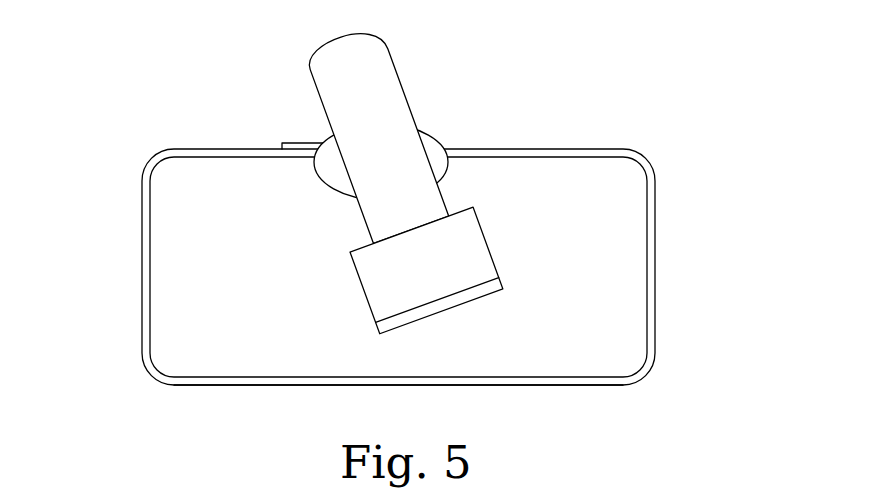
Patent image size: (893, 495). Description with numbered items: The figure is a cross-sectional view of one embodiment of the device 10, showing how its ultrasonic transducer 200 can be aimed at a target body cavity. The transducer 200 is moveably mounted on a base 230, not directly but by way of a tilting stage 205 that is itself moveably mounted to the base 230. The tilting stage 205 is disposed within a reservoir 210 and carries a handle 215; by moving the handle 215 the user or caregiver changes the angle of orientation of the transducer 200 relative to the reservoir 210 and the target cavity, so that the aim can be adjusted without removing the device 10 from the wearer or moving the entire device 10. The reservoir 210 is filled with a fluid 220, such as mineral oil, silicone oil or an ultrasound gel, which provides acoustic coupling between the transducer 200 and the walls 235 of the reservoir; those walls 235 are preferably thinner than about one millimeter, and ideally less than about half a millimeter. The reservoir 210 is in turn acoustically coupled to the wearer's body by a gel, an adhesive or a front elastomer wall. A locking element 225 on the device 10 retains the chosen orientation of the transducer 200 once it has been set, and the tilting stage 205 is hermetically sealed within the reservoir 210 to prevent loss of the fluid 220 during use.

The device 10 is at (401, 228).
The ultrasonic transducer 200 is at (463, 235).
The tilting stage 205 is at (437, 137).
The reservoir 210 is at (578, 386).
The handle 215 is at (362, 82).
The fluid 220 is at (597, 280).
The locking element 225 is at (303, 142).
The base 230 is at (140, 353).
The walls 235 is at (655, 182).